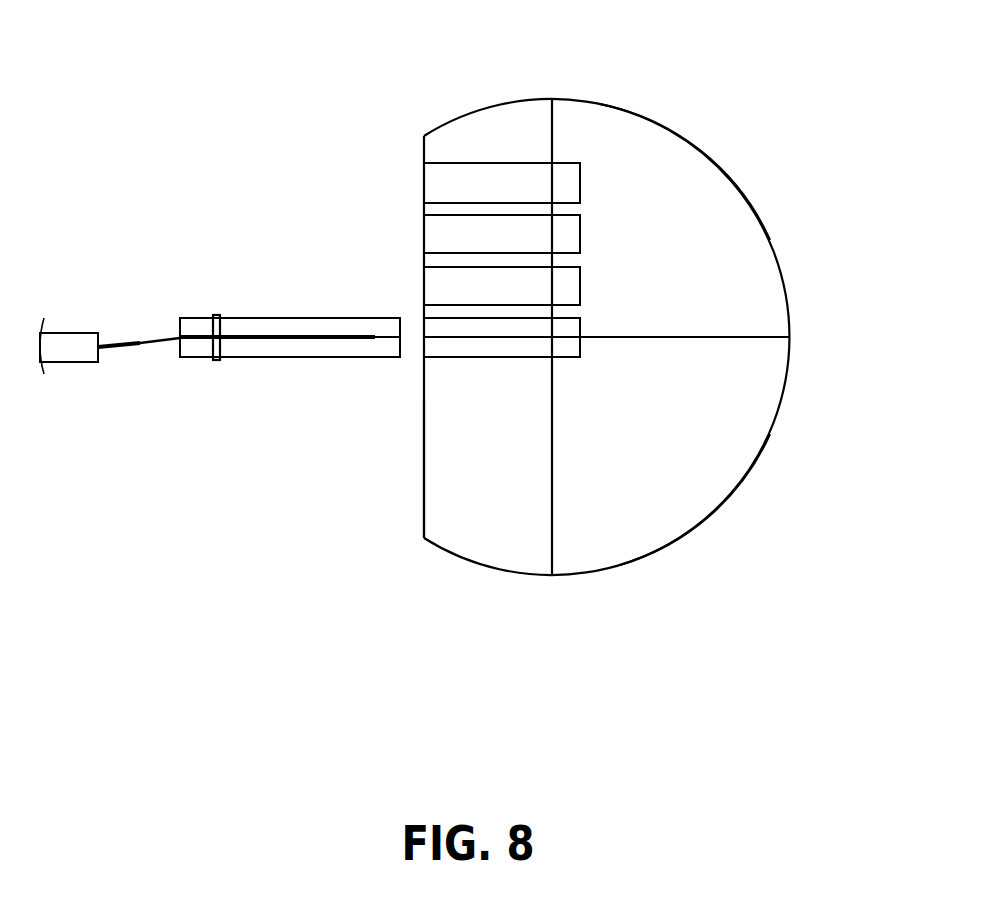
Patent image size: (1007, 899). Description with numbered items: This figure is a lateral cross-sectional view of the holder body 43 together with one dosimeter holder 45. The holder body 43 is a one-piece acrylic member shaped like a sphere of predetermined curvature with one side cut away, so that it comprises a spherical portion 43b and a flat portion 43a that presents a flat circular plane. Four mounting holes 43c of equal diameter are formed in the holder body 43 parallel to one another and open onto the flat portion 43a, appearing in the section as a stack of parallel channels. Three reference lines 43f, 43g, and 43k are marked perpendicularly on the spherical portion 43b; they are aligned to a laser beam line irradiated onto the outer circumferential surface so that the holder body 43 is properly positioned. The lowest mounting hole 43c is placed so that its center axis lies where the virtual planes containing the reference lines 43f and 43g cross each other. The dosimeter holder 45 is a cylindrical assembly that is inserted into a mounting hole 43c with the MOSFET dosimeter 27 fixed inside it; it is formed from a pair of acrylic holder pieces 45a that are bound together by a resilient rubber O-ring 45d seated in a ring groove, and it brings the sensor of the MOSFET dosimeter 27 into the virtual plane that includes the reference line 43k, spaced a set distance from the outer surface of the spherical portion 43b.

The holder body 43 is at (698, 106).
The flat portion 43a is at (422, 483).
The spherical portion 43b is at (712, 205).
The mounting holes 43c is at (485, 180).
The reference line 43f is at (687, 538).
The reference line 43g is at (750, 337).
The reference line 43k is at (553, 132).
The dosimeter holder 45 is at (220, 331).
The holder pieces 45a is at (247, 325).
The O-ring 45d is at (208, 357).
The MOSFET dosimeter 27 is at (268, 340).